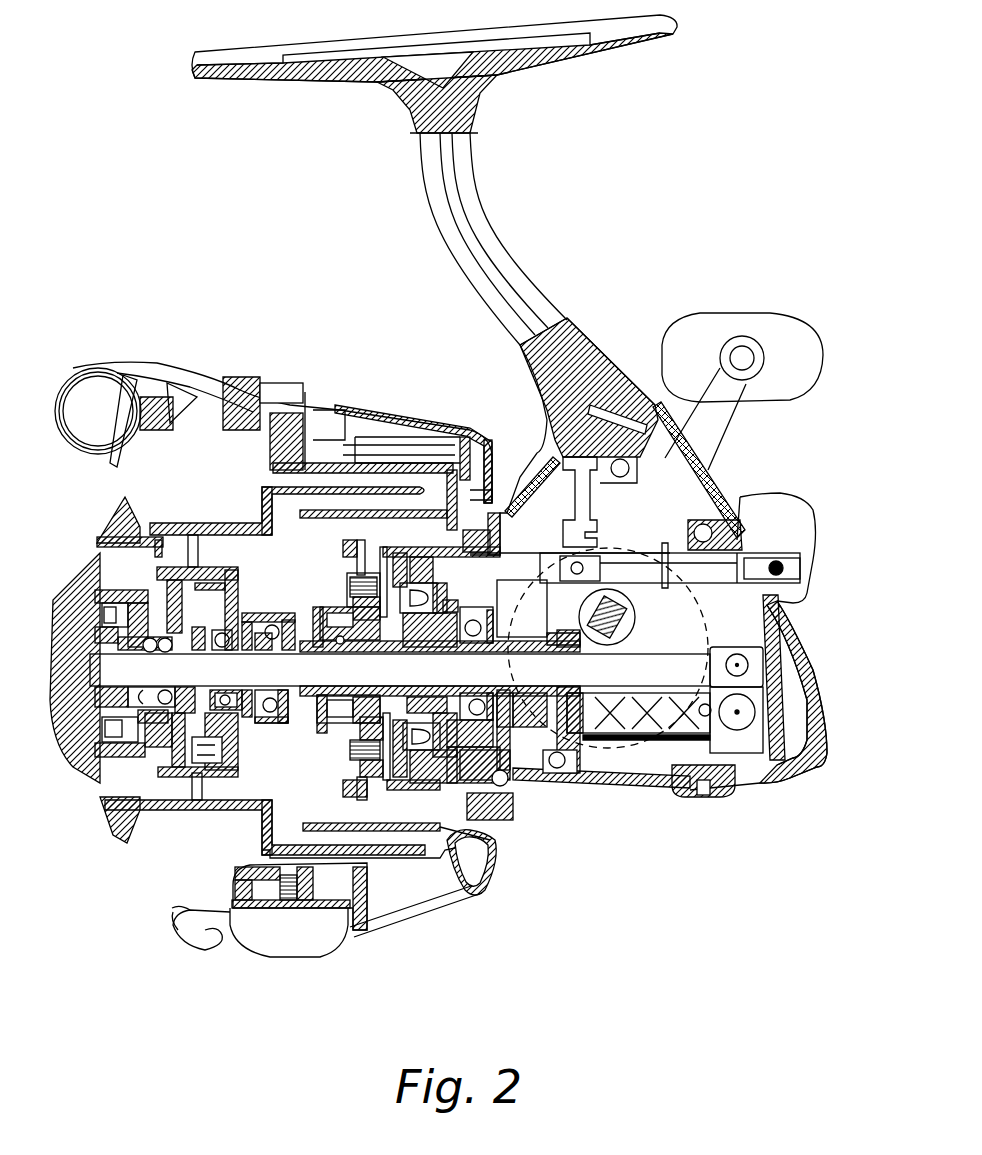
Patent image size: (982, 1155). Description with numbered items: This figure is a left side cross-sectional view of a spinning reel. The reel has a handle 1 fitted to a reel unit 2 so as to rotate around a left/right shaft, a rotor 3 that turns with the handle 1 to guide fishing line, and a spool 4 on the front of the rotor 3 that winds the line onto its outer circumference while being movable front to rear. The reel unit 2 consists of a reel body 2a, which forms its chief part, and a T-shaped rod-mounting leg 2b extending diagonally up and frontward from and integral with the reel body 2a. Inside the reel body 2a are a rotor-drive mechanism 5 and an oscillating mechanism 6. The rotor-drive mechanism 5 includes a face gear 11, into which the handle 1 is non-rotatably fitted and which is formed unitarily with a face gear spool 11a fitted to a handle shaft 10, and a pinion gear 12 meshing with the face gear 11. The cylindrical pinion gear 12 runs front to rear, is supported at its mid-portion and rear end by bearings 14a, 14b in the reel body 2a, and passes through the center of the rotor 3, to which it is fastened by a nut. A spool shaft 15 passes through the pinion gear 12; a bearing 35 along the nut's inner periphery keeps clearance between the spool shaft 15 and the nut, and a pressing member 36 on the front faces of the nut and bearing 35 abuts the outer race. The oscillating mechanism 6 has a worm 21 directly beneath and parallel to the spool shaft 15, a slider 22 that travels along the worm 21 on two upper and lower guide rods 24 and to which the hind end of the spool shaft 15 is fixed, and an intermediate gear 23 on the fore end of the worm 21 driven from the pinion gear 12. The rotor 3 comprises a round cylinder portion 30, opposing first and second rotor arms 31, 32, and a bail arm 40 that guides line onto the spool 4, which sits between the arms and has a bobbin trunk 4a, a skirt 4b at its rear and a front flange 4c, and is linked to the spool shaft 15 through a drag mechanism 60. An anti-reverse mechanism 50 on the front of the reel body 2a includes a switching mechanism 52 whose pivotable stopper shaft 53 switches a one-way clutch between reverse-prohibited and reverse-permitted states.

The handle 1 is at (787, 338).
The reel unit 2 is at (778, 794).
The reel body 2a is at (502, 500).
The rod-mounting leg 2b is at (485, 201).
The rotor 3 is at (488, 900).
The spool 4 is at (165, 830).
The bobbin trunk 4a is at (195, 525).
The skirt 4b is at (307, 480).
The front flange 4c is at (142, 525).
The rotor-drive mechanism 5 is at (515, 505).
The oscillating mechanism 6 is at (737, 797).
The handle shaft 10 is at (595, 668).
The face gear 11 is at (702, 532).
The face gear spool 11a is at (793, 653).
The pinion gear 12 is at (527, 588).
The bearing 14a is at (555, 800).
The bearing 14b is at (590, 690).
The spool shaft 15 is at (603, 690).
The worm 21 is at (780, 778).
The slider 22 is at (752, 680).
The intermediate gear 23 is at (525, 800).
The guide rods 24 is at (697, 752).
The round cylinder portion 30 is at (322, 832).
The first rotor arm 31 is at (358, 478).
The second rotor arm 32 is at (393, 890).
The bearing 35 is at (312, 615).
The pressing member 36 is at (312, 722).
The bail arm 40 is at (87, 465).
The anti-reverse mechanism 50 is at (430, 790).
The switching mechanism 52 is at (664, 560).
The stopper shaft 53 is at (605, 565).
The drag mechanism 60 is at (125, 822).